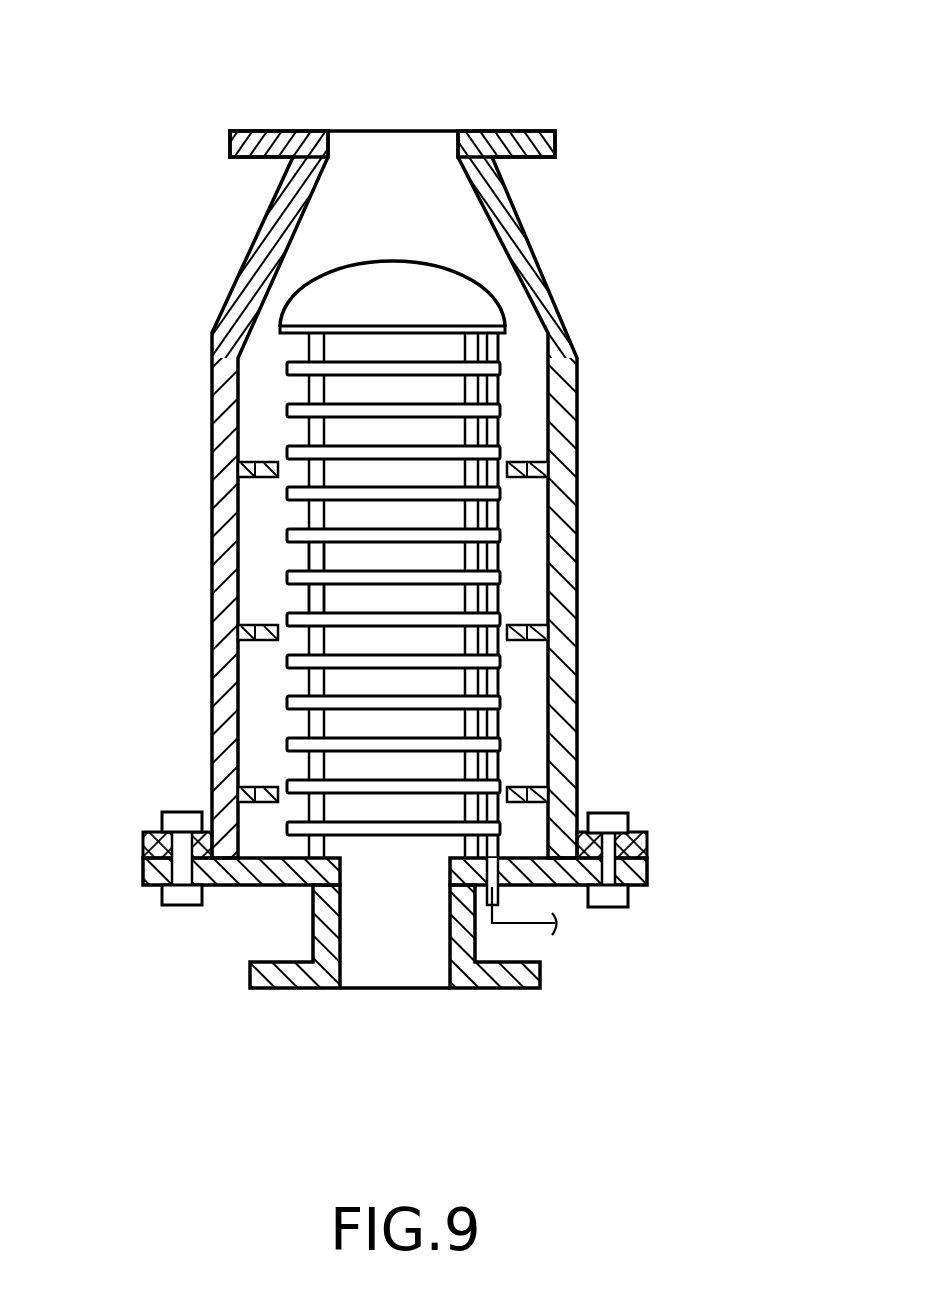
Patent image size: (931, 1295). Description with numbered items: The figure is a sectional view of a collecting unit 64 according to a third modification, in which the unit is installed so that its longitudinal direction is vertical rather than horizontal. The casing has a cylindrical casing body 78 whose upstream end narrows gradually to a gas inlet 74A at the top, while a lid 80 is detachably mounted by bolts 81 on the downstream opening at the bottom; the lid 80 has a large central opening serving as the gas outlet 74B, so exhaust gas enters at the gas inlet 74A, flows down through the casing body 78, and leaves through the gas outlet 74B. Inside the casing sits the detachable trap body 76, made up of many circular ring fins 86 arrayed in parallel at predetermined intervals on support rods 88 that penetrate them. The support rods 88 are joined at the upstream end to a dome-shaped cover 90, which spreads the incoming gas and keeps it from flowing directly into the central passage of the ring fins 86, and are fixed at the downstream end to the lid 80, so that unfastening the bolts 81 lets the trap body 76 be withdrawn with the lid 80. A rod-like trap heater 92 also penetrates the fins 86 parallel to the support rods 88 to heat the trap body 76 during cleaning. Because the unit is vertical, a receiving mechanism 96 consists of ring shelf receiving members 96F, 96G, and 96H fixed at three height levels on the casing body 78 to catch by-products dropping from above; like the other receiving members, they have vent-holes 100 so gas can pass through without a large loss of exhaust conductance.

The collecting unit 64 is at (172, 1048).
The gas inlet 74A is at (392, 130).
The gas outlet 74B is at (397, 990).
The trap body 76 is at (403, 611).
The casing body 78 is at (575, 410).
The lid 80 is at (570, 890).
The bolts 81 is at (163, 897).
The fins 86 is at (287, 578).
The support rods 88 is at (303, 390).
The cover 90 is at (488, 292).
The trap heater 92 is at (503, 333).
The receiving mechanism 96 is at (655, 632).
The ring shelf receiving member 96H is at (512, 479).
The ring shelf receiving member 96G is at (513, 624).
The ring shelf receiving member 96F is at (513, 786).
The vent-holes 100 is at (245, 452).